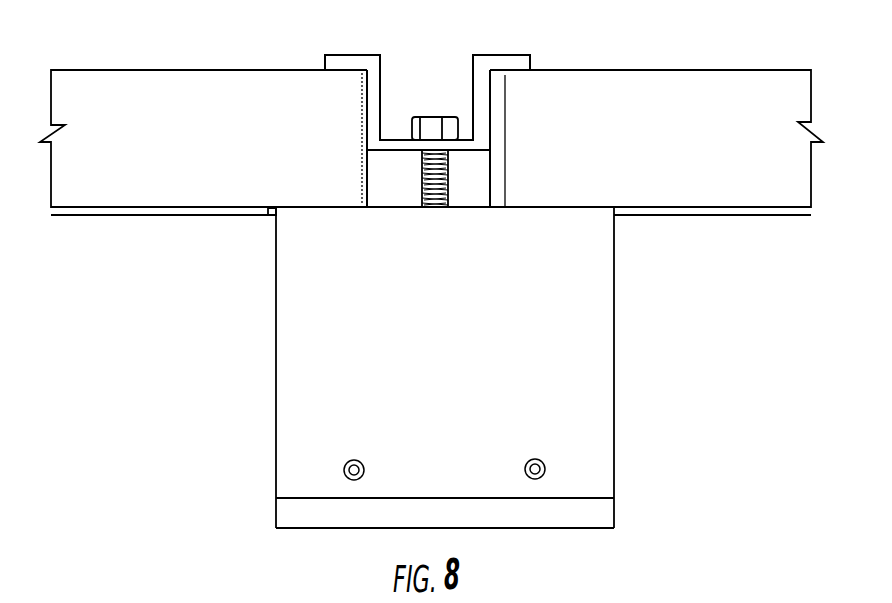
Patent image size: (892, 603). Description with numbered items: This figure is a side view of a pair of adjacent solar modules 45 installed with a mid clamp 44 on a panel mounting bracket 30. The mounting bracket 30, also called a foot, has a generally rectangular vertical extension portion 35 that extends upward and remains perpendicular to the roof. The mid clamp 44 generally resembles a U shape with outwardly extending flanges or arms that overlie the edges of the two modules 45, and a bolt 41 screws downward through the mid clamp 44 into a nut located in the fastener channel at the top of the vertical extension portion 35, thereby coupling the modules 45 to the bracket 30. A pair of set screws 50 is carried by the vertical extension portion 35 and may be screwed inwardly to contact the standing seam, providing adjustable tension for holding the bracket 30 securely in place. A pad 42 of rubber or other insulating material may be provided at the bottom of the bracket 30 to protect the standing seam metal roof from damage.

The panel mounting bracket 30 is at (205, 412).
The vertical extension portion 35 is at (614, 310).
The bolt 41 is at (445, 117).
The pad 42 is at (582, 530).
The mid clamp 44 is at (505, 55).
The solar module 45 is at (238, 70).
The set screw 50 is at (543, 460).